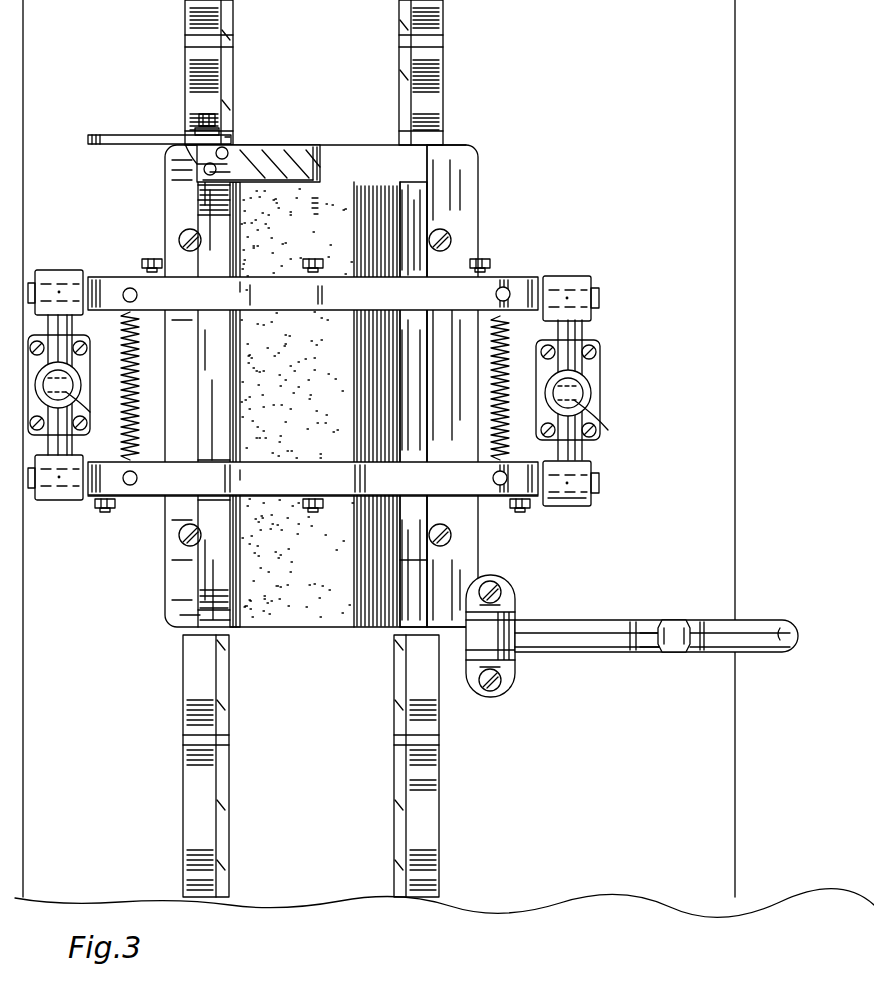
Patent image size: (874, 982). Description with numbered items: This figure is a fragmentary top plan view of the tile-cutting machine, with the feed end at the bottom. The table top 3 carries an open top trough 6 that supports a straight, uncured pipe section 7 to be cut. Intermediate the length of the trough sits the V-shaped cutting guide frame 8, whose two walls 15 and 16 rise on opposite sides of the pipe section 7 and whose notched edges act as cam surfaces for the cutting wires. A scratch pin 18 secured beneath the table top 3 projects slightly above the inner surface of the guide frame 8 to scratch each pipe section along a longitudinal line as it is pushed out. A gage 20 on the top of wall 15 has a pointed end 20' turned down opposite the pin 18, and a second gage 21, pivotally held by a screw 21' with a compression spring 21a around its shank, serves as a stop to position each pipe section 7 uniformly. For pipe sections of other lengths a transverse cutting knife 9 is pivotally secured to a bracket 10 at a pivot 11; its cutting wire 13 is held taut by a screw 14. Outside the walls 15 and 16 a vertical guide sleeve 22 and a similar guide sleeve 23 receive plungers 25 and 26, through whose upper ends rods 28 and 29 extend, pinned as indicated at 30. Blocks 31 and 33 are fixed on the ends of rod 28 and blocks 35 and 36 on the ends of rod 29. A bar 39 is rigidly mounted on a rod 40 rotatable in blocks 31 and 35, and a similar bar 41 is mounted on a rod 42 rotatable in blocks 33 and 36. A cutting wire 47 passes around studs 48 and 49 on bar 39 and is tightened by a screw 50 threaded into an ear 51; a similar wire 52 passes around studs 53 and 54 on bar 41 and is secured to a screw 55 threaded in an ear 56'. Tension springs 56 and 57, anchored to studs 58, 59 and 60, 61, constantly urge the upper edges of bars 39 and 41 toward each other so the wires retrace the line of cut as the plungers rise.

The table top 3 is at (720, 487).
The open top trough 6 is at (240, 800).
The pipe section 7 is at (364, 404).
The cutting guide frame 8 is at (198, 590).
The transverse cutting knife 9 is at (614, 658).
The bracket 10 is at (474, 685).
The pivot 11 is at (498, 670).
The cutting wire 13 is at (564, 644).
The screw 14 is at (680, 650).
The wall 15 is at (210, 563).
The wall 16 is at (413, 558).
The scratch pin 18 is at (294, 401).
The gage 20 is at (258, 146).
The pointed end 20' is at (336, 141).
The gage 21 is at (154, 133).
The compression spring 21a is at (200, 130).
The screw 21' is at (181, 100).
The vertical guide sleeve 22 is at (80, 378).
The guide sleeve 23 is at (588, 380).
The plunger 25 is at (79, 398).
The plunger 26 is at (593, 409).
The rod 28 is at (56, 324).
The rod 29 is at (580, 326).
The pin 30 is at (72, 365).
The block 31 is at (50, 498).
The block 33 is at (55, 270).
The block 35 is at (582, 506).
The block 36 is at (568, 276).
The bar 39 is at (313, 479).
The rod 40 is at (595, 483).
The bar 41 is at (313, 293).
The rod 42 is at (600, 294).
The cutting wire 47 is at (344, 500).
The stud 48 is at (104, 513).
The stud 49 is at (520, 513).
The screw 50 is at (313, 513).
The ear 51 is at (312, 480).
The wire 52 is at (258, 245).
The stud 53 is at (152, 259).
The stud 54 is at (488, 254).
The screw 55 is at (322, 254).
The tension spring 56 is at (110, 386).
The ear 56' is at (327, 312).
The tension spring 57 is at (510, 354).
The stud 58 is at (131, 486).
The stud 59 is at (130, 288).
The stud 60 is at (498, 486).
The stud 61 is at (504, 287).